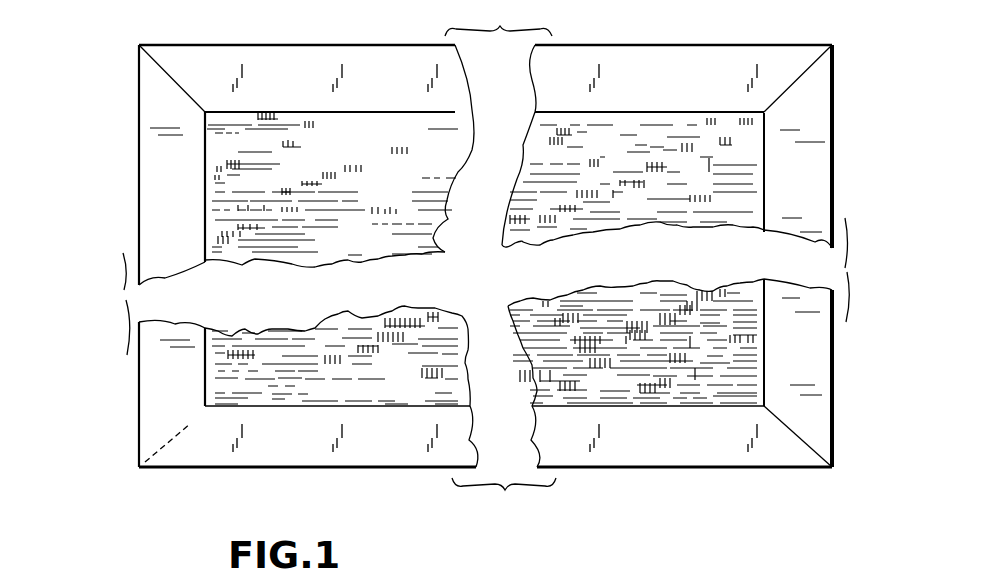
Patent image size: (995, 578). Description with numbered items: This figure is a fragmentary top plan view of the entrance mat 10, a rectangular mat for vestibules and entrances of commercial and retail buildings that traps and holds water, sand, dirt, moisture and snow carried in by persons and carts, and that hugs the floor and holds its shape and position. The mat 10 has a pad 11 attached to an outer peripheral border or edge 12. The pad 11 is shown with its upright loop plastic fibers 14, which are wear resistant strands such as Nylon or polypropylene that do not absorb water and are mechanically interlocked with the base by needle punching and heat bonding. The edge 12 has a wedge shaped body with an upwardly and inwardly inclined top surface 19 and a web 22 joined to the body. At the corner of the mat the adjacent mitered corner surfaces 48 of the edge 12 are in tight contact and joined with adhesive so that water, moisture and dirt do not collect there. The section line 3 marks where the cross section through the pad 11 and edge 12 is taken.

The mat 10 is at (845, 183).
The pad 11 is at (649, 158).
The outer peripheral border or edge 12 is at (158, 150).
The upright loop plastic fibers 14 is at (617, 378).
The top surface 19 is at (139, 385).
The web 22 is at (155, 422).
The mitered corner surface 48 is at (793, 433).
The section line 3- 3 is at (100, 208).